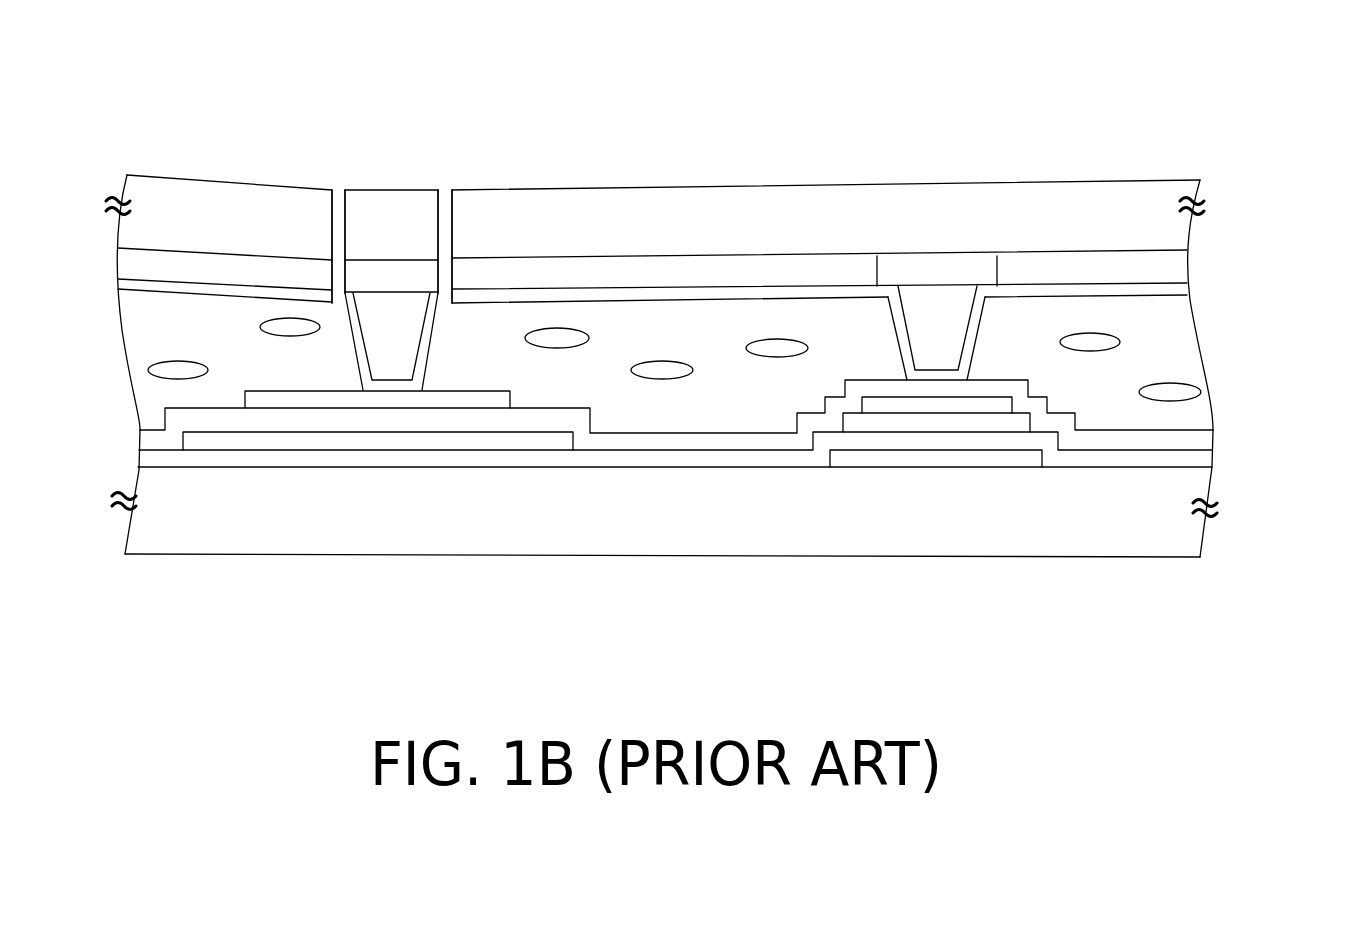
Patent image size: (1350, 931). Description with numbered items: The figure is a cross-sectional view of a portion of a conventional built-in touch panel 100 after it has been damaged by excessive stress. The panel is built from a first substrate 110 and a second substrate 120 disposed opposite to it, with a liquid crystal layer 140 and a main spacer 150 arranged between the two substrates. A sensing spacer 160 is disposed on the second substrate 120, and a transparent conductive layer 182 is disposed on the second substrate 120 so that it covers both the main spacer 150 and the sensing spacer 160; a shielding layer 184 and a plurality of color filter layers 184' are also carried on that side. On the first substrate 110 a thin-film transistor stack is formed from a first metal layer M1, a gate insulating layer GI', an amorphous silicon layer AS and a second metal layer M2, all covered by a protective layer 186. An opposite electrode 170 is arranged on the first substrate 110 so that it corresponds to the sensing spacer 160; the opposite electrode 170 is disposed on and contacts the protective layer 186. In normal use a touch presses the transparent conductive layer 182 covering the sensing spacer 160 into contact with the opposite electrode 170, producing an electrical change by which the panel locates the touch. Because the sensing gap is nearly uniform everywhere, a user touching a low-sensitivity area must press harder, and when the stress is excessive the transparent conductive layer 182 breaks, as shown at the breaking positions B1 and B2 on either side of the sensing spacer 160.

The built-in touch panel 100 is at (1330, 624).
The first substrate 110 is at (150, 478).
The second substrate 120 is at (133, 193).
The liquid crystal layer 140 is at (252, 322).
The main spacer 150 is at (960, 300).
The sensing spacer 160 is at (385, 310).
The opposite electrode 170 is at (255, 402).
The transparent conductive layer 182 is at (125, 292).
The shielding layer 184 is at (923, 182).
The color filter layers 184' is at (652, 169).
The protective layer 186 is at (148, 437).
The breaking position B1 is at (338, 184).
The breaking position B2 is at (445, 184).
The gate insulating layer GI' is at (715, 438).
The first metal layer M1 is at (991, 455).
The amorphous silicon layer AS is at (917, 420).
The second metal layer M2 is at (875, 405).